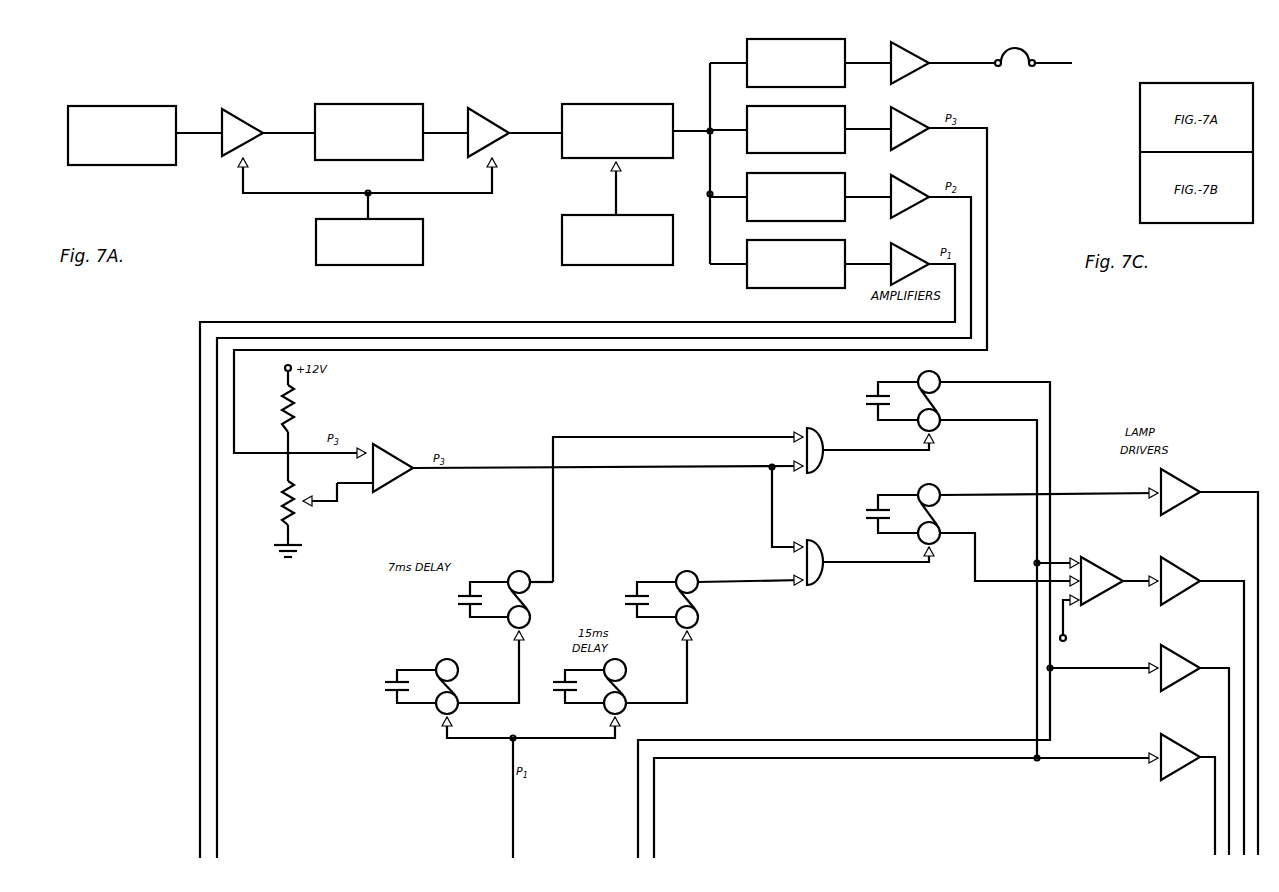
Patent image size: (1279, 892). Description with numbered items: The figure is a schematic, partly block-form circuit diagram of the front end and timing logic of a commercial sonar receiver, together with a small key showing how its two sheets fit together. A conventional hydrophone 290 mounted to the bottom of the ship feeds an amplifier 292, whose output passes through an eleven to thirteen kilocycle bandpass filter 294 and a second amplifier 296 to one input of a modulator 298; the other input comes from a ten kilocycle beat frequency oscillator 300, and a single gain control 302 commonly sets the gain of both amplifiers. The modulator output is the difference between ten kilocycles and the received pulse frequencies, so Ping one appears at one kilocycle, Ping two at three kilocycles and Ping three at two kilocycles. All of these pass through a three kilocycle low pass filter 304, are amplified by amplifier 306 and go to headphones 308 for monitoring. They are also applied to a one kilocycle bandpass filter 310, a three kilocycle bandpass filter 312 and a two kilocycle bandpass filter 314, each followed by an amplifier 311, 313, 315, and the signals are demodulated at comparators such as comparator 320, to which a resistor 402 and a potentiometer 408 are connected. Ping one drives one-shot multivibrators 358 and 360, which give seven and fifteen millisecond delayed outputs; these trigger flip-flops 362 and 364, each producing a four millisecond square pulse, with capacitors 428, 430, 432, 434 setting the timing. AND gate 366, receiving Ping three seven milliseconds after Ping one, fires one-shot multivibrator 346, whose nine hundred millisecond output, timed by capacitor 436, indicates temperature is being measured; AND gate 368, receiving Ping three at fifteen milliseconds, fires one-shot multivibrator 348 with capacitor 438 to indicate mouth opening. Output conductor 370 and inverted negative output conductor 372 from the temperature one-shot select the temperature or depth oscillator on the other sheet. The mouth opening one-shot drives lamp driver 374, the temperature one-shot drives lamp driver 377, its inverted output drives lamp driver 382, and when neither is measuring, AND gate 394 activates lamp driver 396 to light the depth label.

The hydrophone 290 is at (152, 106).
The amplifier 292 is at (238, 120).
The 11 to 13 kilocycle bandpass filter 294 is at (398, 104).
The second amplifier 296 is at (490, 118).
The modulator 298 is at (618, 107).
The ten kilocycle beat frequency oscillator 300 is at (640, 215).
The gain control 302 is at (423, 252).
The three kilocycle low pass filter 304 is at (845, 50).
The amplifier 306 is at (910, 50).
The headphones 308 is at (1030, 46).
The one kilocycle bandpass filter 310 is at (845, 254).
The amplifier P1 311 is at (905, 246).
The three kilocycle bandpass filter 312 is at (845, 186).
The amplifier P2 313 is at (905, 178).
The two kilocycle bandpass filter 314 is at (845, 118).
The amplifier P3 315 is at (905, 110).
The comparator 320 is at (392, 450).
The one-shot multivibrator 346 is at (940, 378).
The one-shot multivibrator 348 is at (936, 488).
The one-shot multivibrator 358 is at (458, 667).
The one-shot multivibrator 360 is at (627, 663).
The flip-flop 362 is at (521, 570).
The flip-flop 364 is at (689, 570).
The AND gate 366 is at (826, 445).
The AND gate 368 is at (826, 548).
The output conductor 370 is at (905, 738).
The inverted negative output conductor 372 is at (970, 762).
The lamp driver 374 is at (1185, 482).
The lamp driver 377 is at (1180, 658).
The lamp driver 382 is at (1178, 746).
The AND gate 394 is at (1092, 562).
The lamp driver 396 is at (1185, 568).
The resistor 402 is at (300, 412).
The potentiometer 408 is at (300, 503).
The capacitor 428 is at (385, 700).
The capacitor 430 is at (560, 696).
The capacitor 432 is at (460, 606).
The capacitor 434 is at (627, 594).
The capacitor 436 is at (868, 394).
The capacitor 438 is at (868, 508).